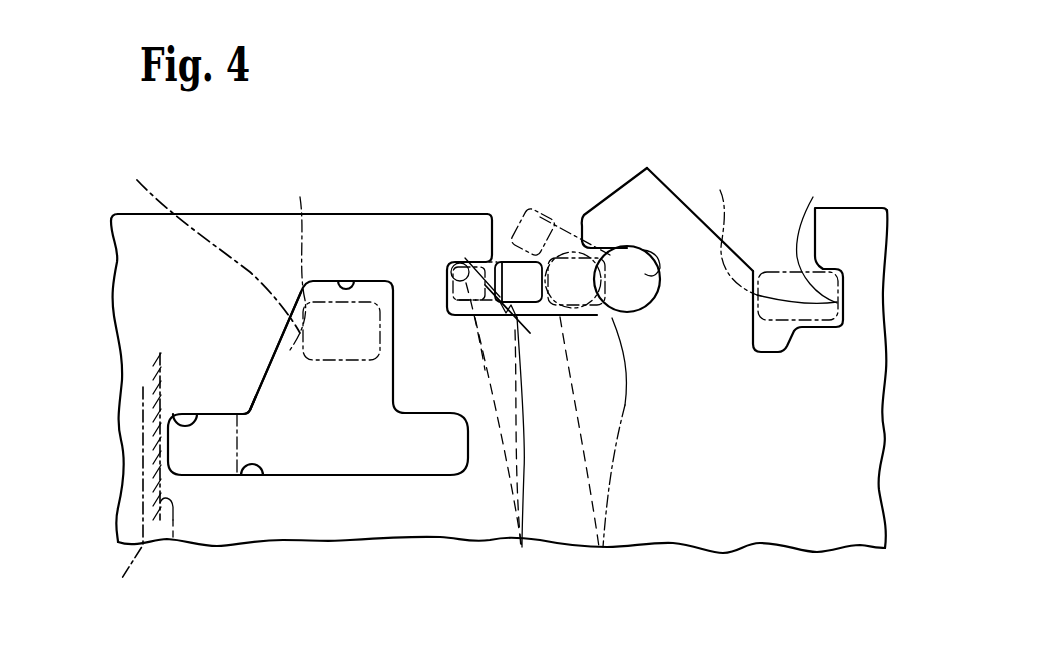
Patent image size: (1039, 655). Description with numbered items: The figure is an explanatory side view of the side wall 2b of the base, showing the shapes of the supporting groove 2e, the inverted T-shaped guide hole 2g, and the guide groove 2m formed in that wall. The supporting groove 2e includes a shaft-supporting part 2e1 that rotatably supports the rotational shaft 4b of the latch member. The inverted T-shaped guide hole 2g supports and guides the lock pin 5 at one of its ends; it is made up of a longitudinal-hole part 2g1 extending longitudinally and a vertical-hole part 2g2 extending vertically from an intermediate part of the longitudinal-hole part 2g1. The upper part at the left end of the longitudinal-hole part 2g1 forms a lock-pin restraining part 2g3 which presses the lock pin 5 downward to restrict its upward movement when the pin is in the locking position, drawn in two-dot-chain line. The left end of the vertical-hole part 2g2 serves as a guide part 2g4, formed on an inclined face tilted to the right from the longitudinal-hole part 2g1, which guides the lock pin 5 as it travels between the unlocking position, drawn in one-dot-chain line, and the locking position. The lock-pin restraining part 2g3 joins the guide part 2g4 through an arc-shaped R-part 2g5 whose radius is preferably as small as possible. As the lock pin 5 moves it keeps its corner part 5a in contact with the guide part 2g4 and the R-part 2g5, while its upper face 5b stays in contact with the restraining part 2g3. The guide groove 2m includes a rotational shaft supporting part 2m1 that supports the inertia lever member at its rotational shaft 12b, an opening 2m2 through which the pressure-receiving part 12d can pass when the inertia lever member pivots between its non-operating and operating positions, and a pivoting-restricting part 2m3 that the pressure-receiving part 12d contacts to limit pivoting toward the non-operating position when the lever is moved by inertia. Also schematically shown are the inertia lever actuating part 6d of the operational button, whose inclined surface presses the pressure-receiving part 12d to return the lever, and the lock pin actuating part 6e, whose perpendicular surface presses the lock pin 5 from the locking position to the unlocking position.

The side wall 2b is at (236, 214).
The supporting groove 2e is at (771, 250).
The shaft-supporting part 2e1 is at (818, 238).
The inverted T-shaped guide hole 2g is at (341, 397).
The longitudinal-hole part 2g1 is at (254, 478).
The vertical-hole part 2g2 is at (348, 281).
The lock-pin restraining part 2g3 is at (156, 402).
The guide part 2g4 is at (272, 357).
The R-part 2g5 is at (250, 416).
The guide groove 2m is at (572, 216).
The rotational shaft supporting part 2m1 is at (643, 250).
The opening 2m2 is at (498, 262).
The pivoting-restricting part 2m3 is at (447, 264).
The rotational shaft 4b is at (763, 238).
The lock pin 5 is at (160, 379).
The corner part 5a is at (313, 303).
The upper face 5b is at (299, 261).
The inertia lever actuating part 6d is at (457, 258).
The lock pin actuating part 6e is at (172, 537).
The rotational shaft 12b is at (601, 547).
The pressure-receiving part 12d is at (553, 222).